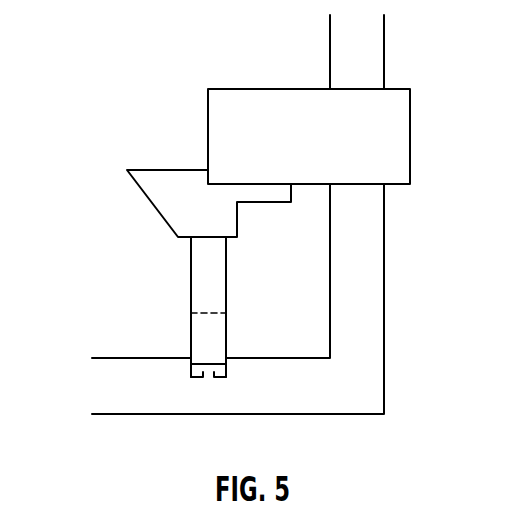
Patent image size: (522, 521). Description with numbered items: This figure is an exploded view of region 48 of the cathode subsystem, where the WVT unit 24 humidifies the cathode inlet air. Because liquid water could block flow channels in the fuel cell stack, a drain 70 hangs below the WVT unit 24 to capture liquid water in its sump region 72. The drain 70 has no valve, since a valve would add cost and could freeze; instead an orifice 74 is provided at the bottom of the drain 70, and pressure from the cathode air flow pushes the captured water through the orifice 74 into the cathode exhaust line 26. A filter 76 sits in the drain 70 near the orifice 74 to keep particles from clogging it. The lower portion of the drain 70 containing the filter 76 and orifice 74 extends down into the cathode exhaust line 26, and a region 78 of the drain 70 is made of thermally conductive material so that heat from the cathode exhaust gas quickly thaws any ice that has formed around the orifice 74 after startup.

The region 48 is at (118, 54).
The WVT unit 24 is at (411, 136).
The cathode exhaust line 26 is at (385, 277).
The drain 70 is at (152, 205).
The sump region 72 is at (227, 283).
The orifice 74 is at (200, 382).
The filter 76 is at (208, 363).
The region 78 is at (226, 372).